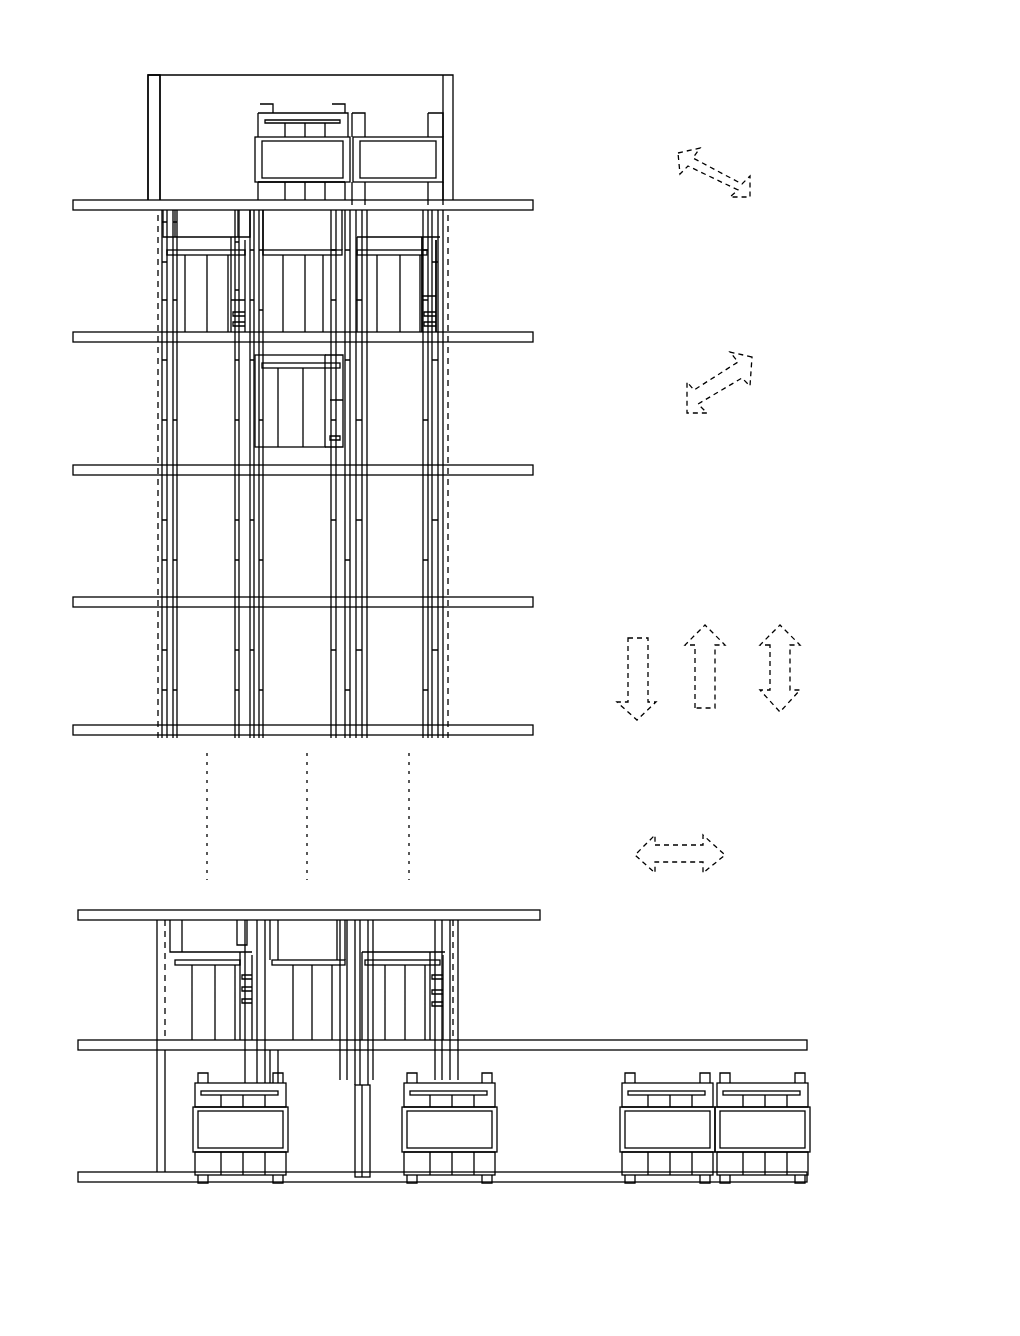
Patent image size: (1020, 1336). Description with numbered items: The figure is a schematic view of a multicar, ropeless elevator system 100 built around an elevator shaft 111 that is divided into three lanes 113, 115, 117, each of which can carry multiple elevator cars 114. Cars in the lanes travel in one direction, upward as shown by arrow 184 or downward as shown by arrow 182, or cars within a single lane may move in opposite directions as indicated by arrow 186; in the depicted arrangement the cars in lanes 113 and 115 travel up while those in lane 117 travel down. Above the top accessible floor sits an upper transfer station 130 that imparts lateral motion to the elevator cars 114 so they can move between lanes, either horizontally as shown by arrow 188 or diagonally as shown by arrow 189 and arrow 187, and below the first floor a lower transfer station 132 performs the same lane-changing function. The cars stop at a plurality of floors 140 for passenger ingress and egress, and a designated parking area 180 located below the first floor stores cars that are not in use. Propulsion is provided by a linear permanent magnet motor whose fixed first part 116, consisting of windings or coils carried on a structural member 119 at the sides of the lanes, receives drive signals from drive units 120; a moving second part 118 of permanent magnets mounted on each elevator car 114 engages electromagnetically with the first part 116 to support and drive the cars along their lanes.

The elevator system 100 is at (124, 48).
The elevator shaft 111 is at (453, 86).
The lane 113 is at (420, 678).
The elevator car 114 is at (193, 275).
The lane 115 is at (283, 667).
The first part 116 is at (435, 547).
The lane 117 is at (202, 517).
The second part 118 is at (430, 305).
The structural member 119 is at (170, 472).
The drive unit 120 is at (157, 227).
The upper transfer station 130 is at (187, 134).
The lower transfer station 132 is at (170, 1093).
The floor 140 is at (510, 342).
The designated parking area 180 is at (448, 965).
The arrow 182 is at (635, 724).
The arrow 184 is at (705, 714).
The arrow 186 is at (785, 716).
The arrow 187 is at (712, 198).
The arrow 188 is at (680, 875).
The arrow 189 is at (718, 408).